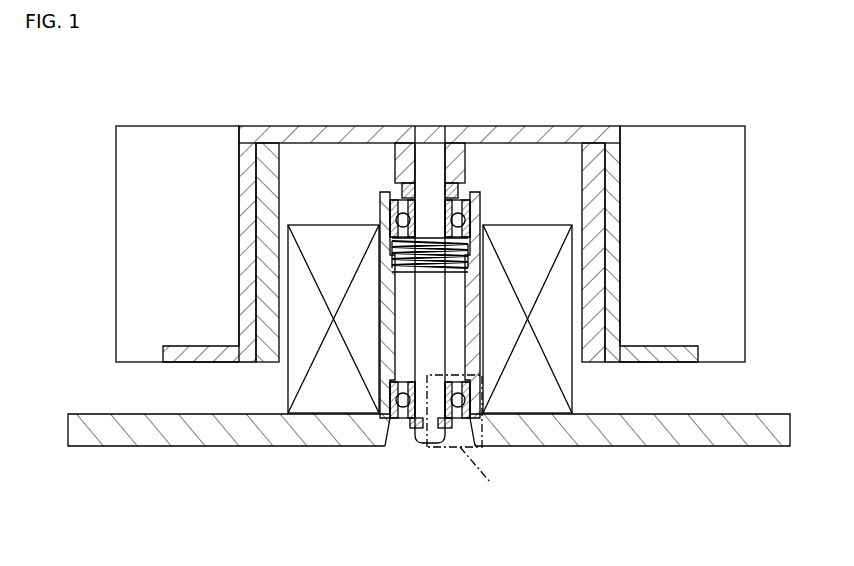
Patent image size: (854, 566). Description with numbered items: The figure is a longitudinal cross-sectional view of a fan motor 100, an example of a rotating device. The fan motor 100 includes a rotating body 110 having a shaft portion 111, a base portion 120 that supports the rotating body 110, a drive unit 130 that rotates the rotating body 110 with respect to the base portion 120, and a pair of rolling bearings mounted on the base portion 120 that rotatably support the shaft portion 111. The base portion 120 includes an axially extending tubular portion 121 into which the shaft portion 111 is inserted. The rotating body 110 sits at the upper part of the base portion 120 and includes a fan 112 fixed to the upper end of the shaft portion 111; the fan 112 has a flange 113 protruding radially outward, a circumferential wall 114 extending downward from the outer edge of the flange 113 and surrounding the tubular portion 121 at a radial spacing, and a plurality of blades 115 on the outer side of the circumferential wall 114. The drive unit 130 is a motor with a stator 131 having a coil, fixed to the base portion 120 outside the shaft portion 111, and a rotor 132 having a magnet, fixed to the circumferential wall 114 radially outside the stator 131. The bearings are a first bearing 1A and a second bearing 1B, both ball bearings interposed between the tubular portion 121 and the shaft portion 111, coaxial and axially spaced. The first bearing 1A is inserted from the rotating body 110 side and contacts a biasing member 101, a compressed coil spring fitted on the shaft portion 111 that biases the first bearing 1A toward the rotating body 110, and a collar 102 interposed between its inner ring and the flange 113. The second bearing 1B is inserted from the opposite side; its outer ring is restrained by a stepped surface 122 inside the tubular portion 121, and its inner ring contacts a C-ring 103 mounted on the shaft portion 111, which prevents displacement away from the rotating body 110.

The fan motor 100 is at (702, 82).
The biasing member 101 is at (457, 250).
The collar 102 is at (410, 192).
The C-ring 103 is at (447, 432).
The rotating body 110 is at (308, 124).
The shaft portion 111 is at (430, 133).
The fan 112 is at (268, 124).
The flange 113 is at (347, 135).
The circumferential wall 114 is at (245, 256).
The blades 115 is at (135, 193).
The base portion 120 is at (232, 449).
The tubular portion 121 is at (388, 347).
The stepped surface 122 is at (395, 392).
The drive unit 130 is at (603, 500).
The stator 131 is at (522, 400).
The rotor 132 is at (585, 318).
The first bearing 1A is at (462, 192).
The second bearing 1B is at (401, 430).